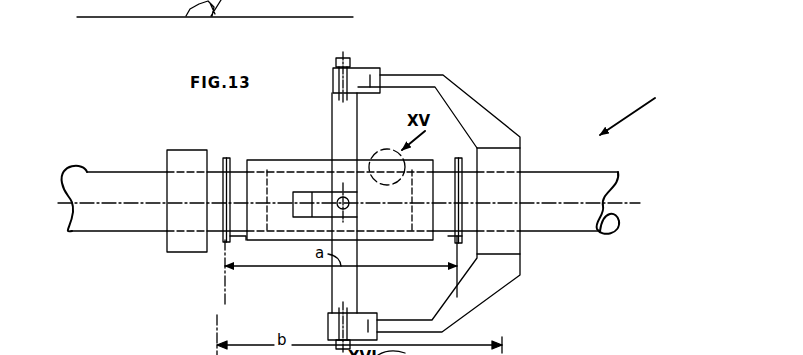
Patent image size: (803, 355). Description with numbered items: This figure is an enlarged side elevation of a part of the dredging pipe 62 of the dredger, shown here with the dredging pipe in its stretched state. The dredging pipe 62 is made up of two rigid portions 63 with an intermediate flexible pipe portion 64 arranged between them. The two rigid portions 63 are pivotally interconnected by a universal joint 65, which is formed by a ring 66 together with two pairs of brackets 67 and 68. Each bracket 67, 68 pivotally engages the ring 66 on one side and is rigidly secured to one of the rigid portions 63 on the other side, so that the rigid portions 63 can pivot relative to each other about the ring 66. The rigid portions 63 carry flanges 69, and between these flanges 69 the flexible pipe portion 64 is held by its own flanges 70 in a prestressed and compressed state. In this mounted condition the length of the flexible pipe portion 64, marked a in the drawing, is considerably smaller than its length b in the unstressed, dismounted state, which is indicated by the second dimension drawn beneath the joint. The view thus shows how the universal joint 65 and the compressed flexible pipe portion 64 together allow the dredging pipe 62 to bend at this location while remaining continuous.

The dredging pipe 62 is at (640, 107).
The rigid portion 63 is at (138, 185).
The flexible pipe portion 64 is at (293, 158).
The universal joint 65 is at (447, 168).
The ring 66 is at (335, 111).
The bracket 67 is at (291, 212).
The bracket 68 is at (483, 113).
The flange 69 is at (228, 158).
The flange 70 is at (246, 237).